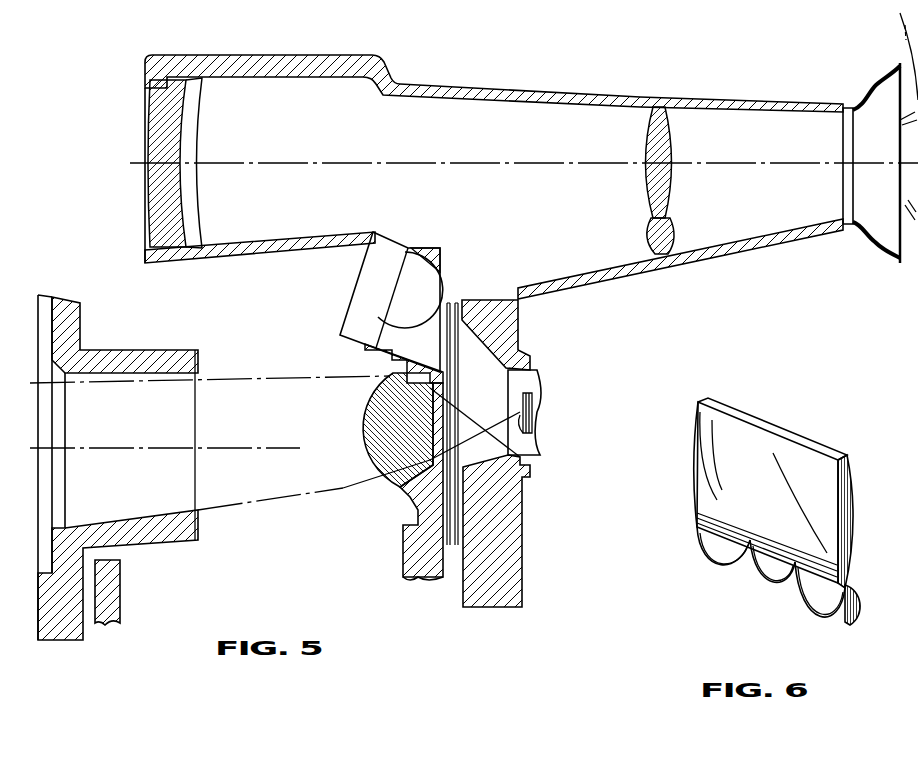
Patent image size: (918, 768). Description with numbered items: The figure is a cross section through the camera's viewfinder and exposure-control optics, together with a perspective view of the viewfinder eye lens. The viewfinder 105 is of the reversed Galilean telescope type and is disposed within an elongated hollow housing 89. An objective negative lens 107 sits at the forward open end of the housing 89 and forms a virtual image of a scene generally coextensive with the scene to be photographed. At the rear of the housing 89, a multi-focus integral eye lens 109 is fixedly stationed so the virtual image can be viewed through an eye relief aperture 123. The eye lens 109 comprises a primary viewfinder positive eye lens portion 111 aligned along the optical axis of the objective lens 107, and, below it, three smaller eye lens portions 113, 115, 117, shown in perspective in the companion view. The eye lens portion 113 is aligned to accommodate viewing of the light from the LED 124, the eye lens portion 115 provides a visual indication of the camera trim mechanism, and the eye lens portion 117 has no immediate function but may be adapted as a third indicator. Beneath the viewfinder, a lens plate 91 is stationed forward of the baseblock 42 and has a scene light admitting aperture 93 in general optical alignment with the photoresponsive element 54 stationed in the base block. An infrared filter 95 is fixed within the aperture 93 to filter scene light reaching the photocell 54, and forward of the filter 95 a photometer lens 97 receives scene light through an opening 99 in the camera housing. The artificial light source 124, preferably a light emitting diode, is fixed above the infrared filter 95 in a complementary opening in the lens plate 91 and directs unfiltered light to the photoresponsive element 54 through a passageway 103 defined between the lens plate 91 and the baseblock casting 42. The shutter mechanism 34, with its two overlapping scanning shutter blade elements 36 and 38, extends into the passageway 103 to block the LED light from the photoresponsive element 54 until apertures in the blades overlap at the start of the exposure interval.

In FIG. 5, the viewfinder 105 is at (497, 80).
In FIG. 5, the housing 89 is at (583, 93).
In FIG. 5, the objective negative lens 107 is at (146, 148).
In FIG. 5, the multi-focus integral eye lens 109 is at (659, 180).
In FIG. 6, the multi-focus integral eye lens 109 is at (769, 522).
In FIG. 5, the primary viewfinder positive eye lens portion 111 is at (643, 148).
In FIG. 6, the primary viewfinder positive eye lens portion 111 is at (755, 462).
In FIG. 5, the eye lens portion 113 is at (652, 243).
In FIG. 6, the eye lens portion 113 is at (710, 550).
In FIG. 6, the eye lens portion 115 is at (757, 573).
In FIG. 6, the eye lens portion 117 is at (812, 597).
In FIG. 5, the eye relief aperture 123 is at (841, 137).
In FIG. 5, the artificial light source 124 is at (446, 302).
In FIG. 5, the shutter mechanism 34 is at (448, 292).
In FIG. 5, the shutter blade element 36 is at (458, 345).
In FIG. 5, the passageway 103 is at (488, 300).
In FIG. 5, the infrared filter 95 is at (456, 403).
In FIG. 5, the scene light admitting aperture 93 is at (437, 458).
In FIG. 5, the photometer lens 97 is at (370, 421).
In FIG. 5, the photoresponsive element 54 is at (540, 452).
In FIG. 5, the lens plate 91 is at (403, 533).
In FIG. 5, the shutter blade element 38 is at (418, 571).
In FIG. 5, the baseblock 42 is at (463, 588).
In FIG. 5, the opening 99 is at (163, 518).